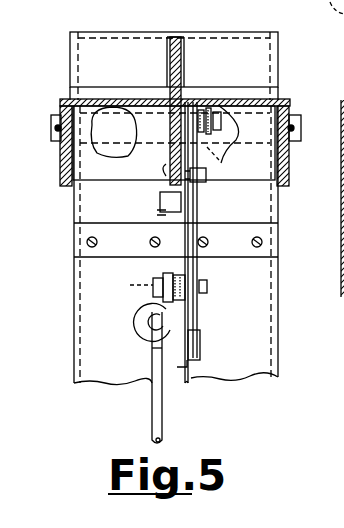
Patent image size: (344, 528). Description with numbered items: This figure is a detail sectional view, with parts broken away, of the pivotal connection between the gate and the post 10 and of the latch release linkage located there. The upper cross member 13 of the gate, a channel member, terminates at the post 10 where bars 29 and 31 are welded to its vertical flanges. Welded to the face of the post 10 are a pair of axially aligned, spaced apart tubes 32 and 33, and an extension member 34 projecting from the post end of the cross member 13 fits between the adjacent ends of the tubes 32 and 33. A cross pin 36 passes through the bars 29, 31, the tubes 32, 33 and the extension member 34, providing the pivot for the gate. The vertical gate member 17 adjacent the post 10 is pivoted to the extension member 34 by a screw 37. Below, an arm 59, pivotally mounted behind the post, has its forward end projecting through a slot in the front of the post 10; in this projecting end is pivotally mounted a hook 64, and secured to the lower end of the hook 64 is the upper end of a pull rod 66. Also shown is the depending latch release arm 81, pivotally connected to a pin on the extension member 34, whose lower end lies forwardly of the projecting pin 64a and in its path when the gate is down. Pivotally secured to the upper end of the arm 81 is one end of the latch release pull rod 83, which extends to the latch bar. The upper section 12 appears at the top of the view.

The post 10 is at (280, 317).
The upper housing section 12 is at (268, 32).
The upper cross member 13 is at (290, 105).
The vertical gate member 17 is at (176, 213).
The bar 29 is at (280, 188).
The bar 31 is at (68, 188).
The tube 32 is at (222, 161).
The tube 33 is at (120, 108).
The extension member 34 is at (183, 78).
The cross pin 36 is at (52, 127).
The screw 37 is at (168, 178).
The arm 59 is at (193, 366).
The hook 64 is at (137, 311).
The projecting pin 64a is at (153, 287).
The pull rod 66 is at (152, 364).
The latch release arm 81 is at (208, 317).
The latch release pull rod 83 is at (215, 122).